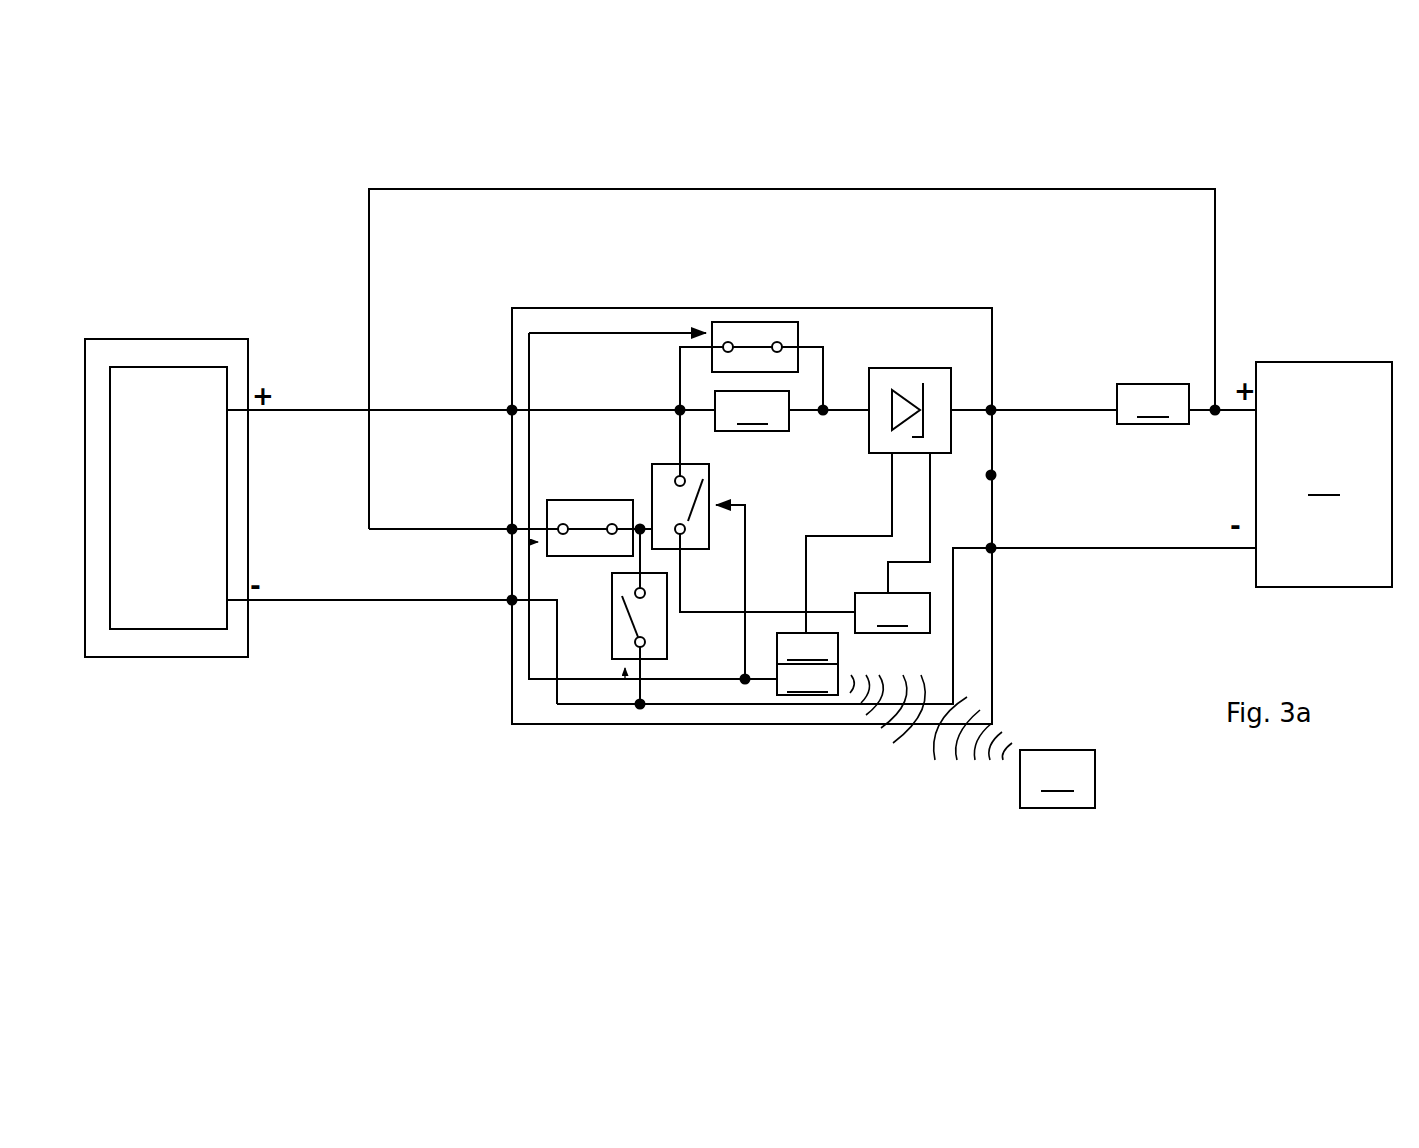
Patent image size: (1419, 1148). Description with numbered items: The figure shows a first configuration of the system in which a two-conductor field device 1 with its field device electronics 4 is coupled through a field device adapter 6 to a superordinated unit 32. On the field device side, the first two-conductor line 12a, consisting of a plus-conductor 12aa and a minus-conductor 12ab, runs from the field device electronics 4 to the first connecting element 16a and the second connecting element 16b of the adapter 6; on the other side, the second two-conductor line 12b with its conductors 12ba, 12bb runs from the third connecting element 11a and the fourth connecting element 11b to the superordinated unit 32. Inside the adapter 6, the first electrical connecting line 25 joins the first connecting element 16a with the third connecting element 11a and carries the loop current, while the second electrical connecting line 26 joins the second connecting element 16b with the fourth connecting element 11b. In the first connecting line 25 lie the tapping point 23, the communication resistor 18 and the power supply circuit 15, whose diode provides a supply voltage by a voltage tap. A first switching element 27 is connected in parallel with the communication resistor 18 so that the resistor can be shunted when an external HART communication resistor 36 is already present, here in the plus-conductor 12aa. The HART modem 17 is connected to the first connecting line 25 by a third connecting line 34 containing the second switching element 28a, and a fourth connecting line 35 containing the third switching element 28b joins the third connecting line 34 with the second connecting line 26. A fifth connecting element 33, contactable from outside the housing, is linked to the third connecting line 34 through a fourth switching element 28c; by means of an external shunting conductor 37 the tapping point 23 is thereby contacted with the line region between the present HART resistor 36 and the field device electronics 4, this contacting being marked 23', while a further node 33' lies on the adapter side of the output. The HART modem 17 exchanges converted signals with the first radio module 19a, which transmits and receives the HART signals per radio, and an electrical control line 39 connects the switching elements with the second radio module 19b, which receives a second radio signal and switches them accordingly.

The two-conductor field device 1 is at (155, 338).
The field device electronics 4 is at (176, 508).
The field device adapter 6 is at (970, 307).
The third connecting element 11a is at (1000, 404).
The fourth connecting element 11b is at (1000, 544).
The first two-conductor line 12a is at (386, 372).
The plus-conductor 12aa is at (304, 412).
The minus-conductor 12ab is at (304, 602).
The second two-conductor line 12b is at (1149, 360).
The minus-conductor 12ba is at (1092, 404).
The negative load line 12bb is at (1119, 549).
The power supply circuit 15 is at (908, 382).
The first connecting element 16a is at (506, 402).
The second connecting element 16b is at (507, 614).
The HART modem 17 is at (892, 613).
The communication resistor 18 is at (792, 411).
The first radio module 19a is at (807, 648).
The second radio module 19b is at (807, 679).
The tapping point 23 is at (645, 409).
The contacting of the tapping point 23' is at (1245, 346).
The first electrical connecting line 25 is at (965, 405).
The second electrical connecting line 26 is at (597, 708).
The first switching element 27 is at (751, 335).
The second switching element 28a is at (710, 483).
The third switching element 28b is at (668, 627).
The fourth switching element 28c is at (588, 515).
The superordinated unit 32 is at (1324, 474).
The fifth connecting element 33 is at (458, 492).
The auxiliary output node 33' is at (1040, 464).
The third connecting line 34 is at (681, 598).
The fourth connecting line 35 is at (638, 565).
The external HART communication resistor 36 is at (1153, 404).
The external shunting conductor 37 is at (1216, 246).
The electrical control line 39 is at (705, 682).